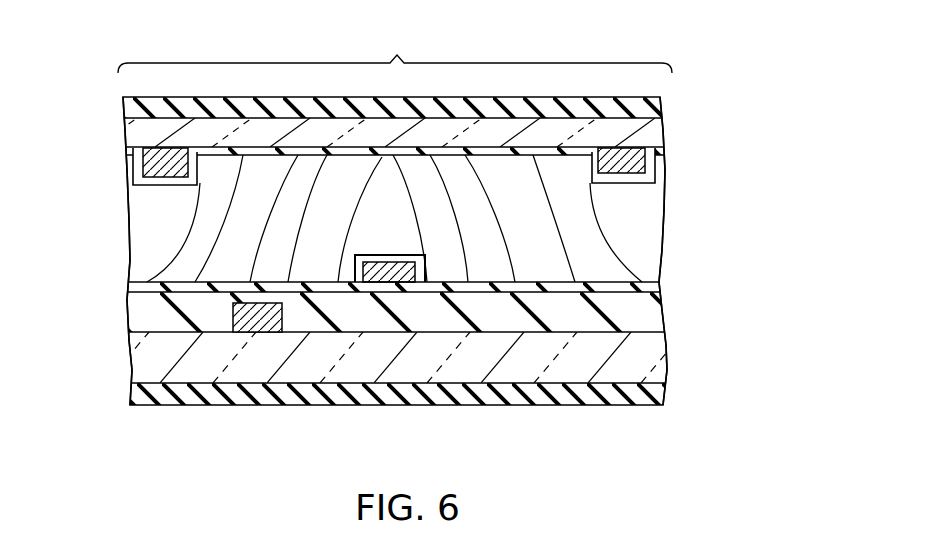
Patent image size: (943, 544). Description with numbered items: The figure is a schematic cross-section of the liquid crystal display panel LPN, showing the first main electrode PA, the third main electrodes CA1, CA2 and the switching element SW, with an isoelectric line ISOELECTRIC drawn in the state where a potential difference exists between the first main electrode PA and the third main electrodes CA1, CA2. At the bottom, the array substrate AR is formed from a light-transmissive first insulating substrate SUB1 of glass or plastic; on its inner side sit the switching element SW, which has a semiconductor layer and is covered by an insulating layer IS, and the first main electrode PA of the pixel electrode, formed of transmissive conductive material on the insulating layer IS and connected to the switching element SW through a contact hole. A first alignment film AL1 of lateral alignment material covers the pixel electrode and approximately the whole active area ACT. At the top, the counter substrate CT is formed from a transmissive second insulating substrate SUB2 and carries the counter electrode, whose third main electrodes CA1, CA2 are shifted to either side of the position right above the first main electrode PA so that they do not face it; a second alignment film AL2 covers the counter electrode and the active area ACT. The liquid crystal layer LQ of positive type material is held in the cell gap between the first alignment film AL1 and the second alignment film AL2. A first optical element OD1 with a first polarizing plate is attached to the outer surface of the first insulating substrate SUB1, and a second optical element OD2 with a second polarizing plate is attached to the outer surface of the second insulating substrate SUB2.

The liquid crystal display panel LPN is at (697, 80).
The active area ACT is at (395, 54).
The counter substrate CT is at (113, 136).
The second optical element OD2 is at (664, 104).
The second insulating substrate SUB2 is at (650, 136).
The second alignment film AL2 is at (656, 152).
The third main electrode CA1 is at (152, 160).
The third main electrode CA2 is at (648, 170).
The isoelectric line ISOELECTRIC is at (612, 246).
The first alignment film AL1 is at (648, 281).
The first main electrode PA is at (383, 282).
The insulating layer IS is at (652, 320).
The switching element SW is at (256, 332).
The first insulating substrate SUB1 is at (652, 350).
The first optical element OD1 is at (662, 392).
The array substrate AR is at (122, 361).
The liquid crystal layer LQ is at (134, 250).